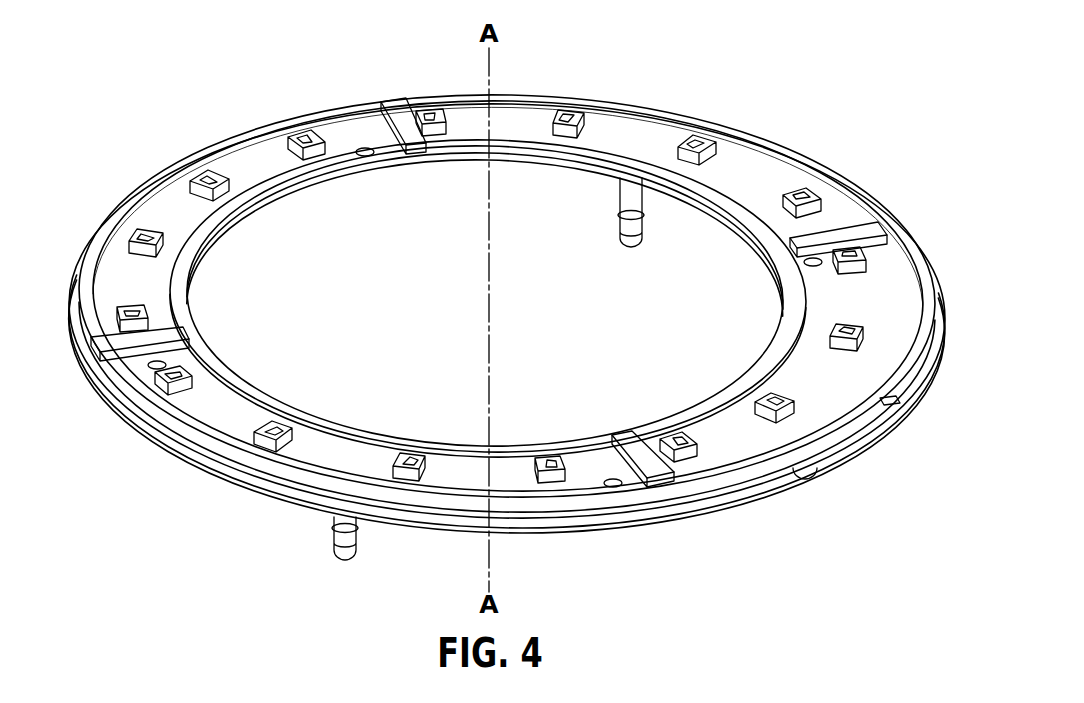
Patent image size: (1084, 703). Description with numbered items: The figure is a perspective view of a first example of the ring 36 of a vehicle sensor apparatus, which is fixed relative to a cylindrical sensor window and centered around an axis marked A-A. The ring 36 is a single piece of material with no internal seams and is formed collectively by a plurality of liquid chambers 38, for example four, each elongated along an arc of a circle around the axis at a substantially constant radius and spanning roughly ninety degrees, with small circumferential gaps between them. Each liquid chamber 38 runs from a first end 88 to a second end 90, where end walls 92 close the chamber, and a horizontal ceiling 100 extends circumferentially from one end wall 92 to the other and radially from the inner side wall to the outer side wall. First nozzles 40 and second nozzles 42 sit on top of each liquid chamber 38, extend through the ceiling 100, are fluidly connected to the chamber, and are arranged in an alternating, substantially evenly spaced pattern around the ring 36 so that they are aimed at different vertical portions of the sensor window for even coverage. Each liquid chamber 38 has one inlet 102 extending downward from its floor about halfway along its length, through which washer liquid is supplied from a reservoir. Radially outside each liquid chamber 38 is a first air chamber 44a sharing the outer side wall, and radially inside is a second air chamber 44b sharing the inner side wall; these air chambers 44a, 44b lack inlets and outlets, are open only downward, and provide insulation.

The ring 36 is at (745, 62).
The liquid chamber 38 is at (740, 165).
The first nozzle 40 is at (430, 113).
The second nozzle 42 is at (298, 133).
The first air chamber 44a is at (655, 106).
The second air chamber 44b is at (215, 238).
The first end 88 is at (362, 96).
The second end 90 is at (345, 108).
The end wall 92 is at (385, 157).
The ceiling 100 is at (608, 128).
The inlet 102 is at (622, 225).